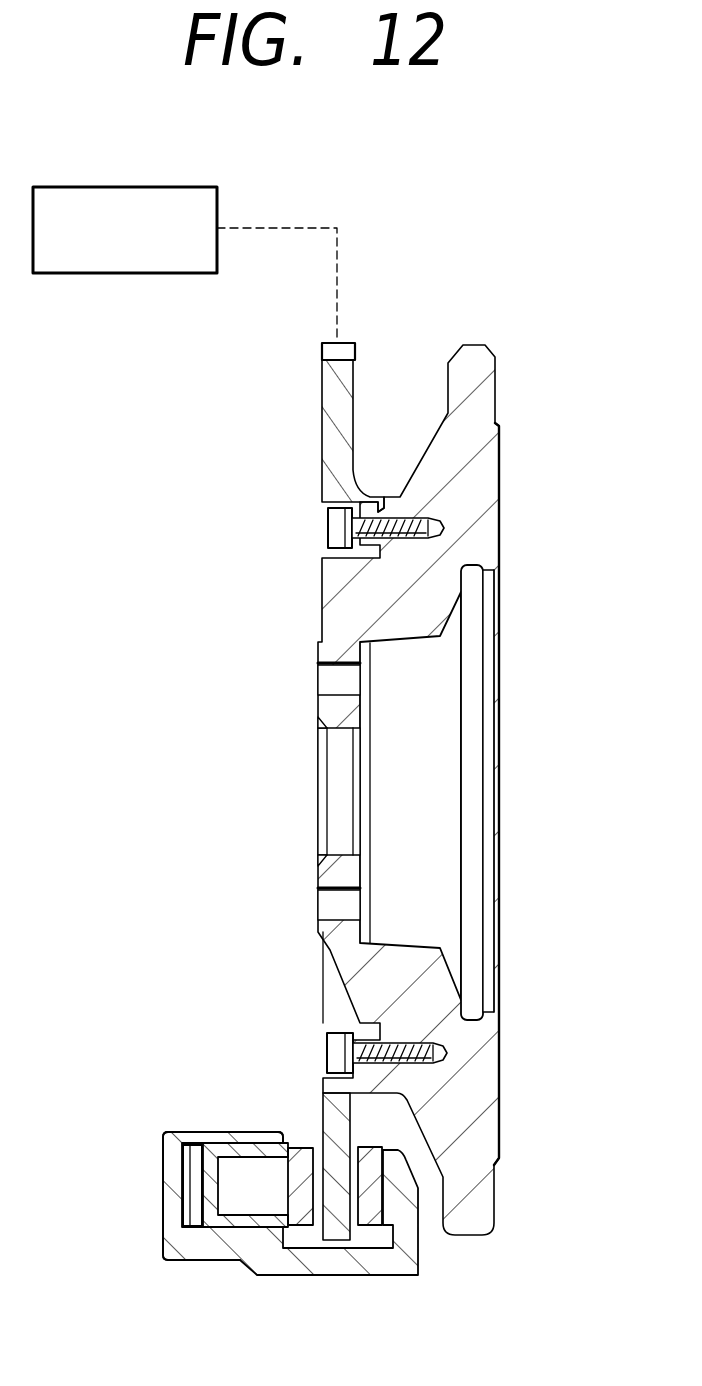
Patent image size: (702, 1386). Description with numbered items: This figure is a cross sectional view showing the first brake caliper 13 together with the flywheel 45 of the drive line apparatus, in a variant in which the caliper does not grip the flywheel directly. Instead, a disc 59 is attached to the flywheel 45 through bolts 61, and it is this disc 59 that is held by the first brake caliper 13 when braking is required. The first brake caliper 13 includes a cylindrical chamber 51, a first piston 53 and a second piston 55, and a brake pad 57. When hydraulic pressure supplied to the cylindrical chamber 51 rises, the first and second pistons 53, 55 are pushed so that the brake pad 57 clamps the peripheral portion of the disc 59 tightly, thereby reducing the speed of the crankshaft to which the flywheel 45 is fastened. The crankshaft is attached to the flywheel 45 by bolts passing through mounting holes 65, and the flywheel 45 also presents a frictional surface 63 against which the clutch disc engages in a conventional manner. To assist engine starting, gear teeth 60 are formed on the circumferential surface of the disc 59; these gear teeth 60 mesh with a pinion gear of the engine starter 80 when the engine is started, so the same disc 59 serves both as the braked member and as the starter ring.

The first brake caliper 13 is at (420, 1271).
The flywheel 45 is at (473, 1087).
The cylindrical chamber 51 is at (193, 1148).
The first piston 53 is at (237, 1143).
The second piston 55 is at (178, 1258).
The brake pad 57 is at (300, 1150).
The disc 59 is at (330, 432).
The gear teeth 60 is at (348, 341).
The bolts 61 is at (337, 532).
The frictional surface 63 is at (500, 463).
The mounting holes 65 is at (328, 681).
The engine starter 80 is at (198, 186).